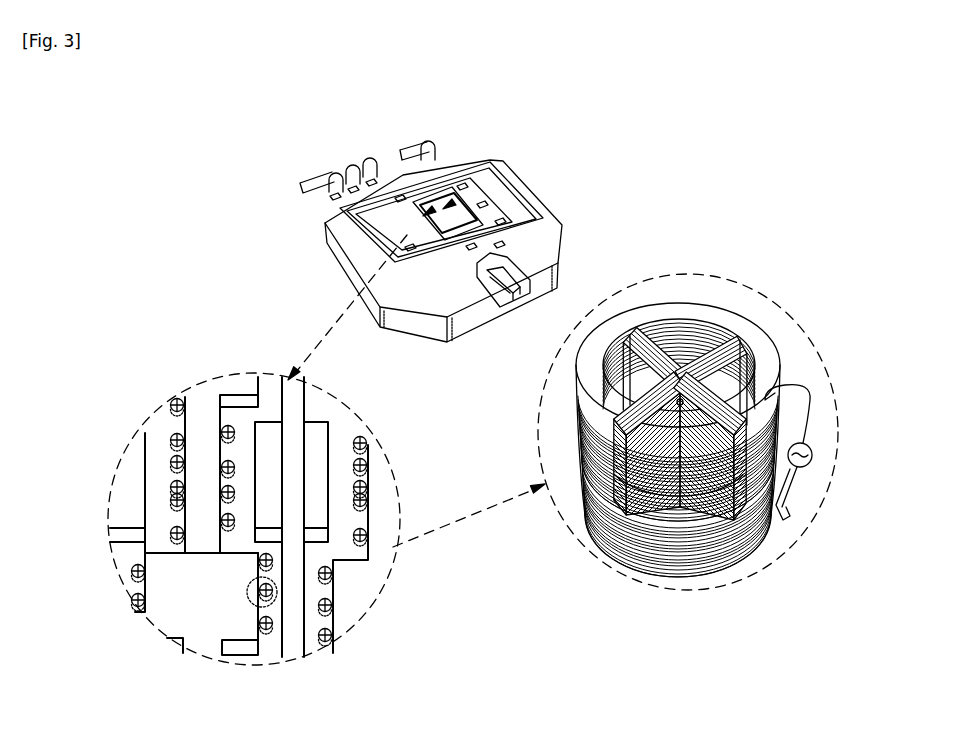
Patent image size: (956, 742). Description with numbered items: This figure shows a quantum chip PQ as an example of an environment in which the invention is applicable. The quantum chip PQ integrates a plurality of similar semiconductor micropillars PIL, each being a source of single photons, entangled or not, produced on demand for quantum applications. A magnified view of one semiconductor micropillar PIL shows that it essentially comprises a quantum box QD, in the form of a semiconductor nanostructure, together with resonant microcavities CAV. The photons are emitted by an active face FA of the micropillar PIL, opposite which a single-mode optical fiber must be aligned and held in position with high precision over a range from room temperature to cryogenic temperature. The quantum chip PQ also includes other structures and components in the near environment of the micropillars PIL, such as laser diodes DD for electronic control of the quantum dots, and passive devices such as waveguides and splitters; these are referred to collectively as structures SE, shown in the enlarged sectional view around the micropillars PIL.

The quantum chip PQ is at (470, 172).
The structures SE is at (300, 578).
The laser diodes DD is at (182, 612).
The semiconductor micropillar PIL is at (741, 304).
The resonant microcavities CAV is at (740, 375).
The active face FA is at (681, 372).
The quantum box QD is at (630, 480).